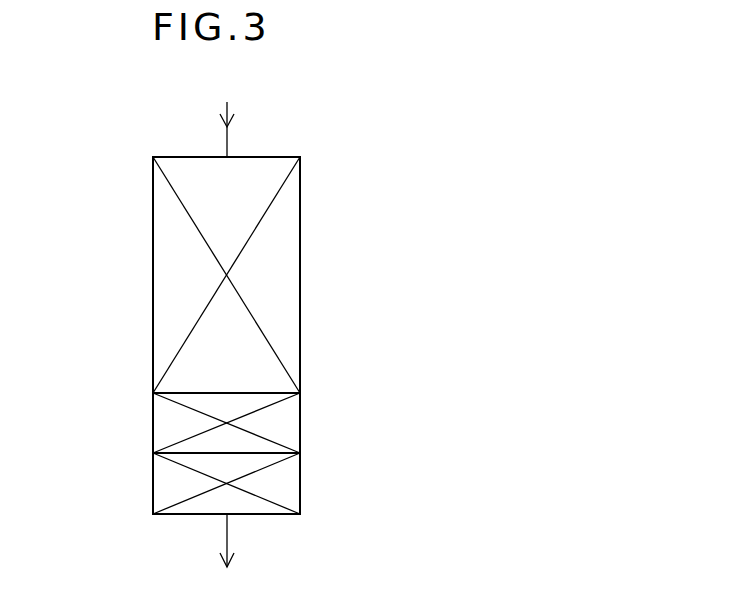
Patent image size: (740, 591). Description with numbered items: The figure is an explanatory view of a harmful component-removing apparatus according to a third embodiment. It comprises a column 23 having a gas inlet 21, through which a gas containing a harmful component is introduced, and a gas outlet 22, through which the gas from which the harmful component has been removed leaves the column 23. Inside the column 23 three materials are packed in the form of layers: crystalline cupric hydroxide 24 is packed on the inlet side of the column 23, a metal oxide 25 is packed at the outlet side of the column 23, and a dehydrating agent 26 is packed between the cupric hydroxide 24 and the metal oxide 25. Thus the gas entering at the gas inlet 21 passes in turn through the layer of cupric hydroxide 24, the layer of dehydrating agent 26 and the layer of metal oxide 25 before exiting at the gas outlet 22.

The gas inlet 21 is at (228, 138).
The gas outlet 22 is at (228, 530).
The column 23 is at (152, 299).
The crystalline cupric hydroxide 24 is at (283, 267).
The metal oxide 25 is at (287, 485).
The dehydrating agent 26 is at (290, 420).